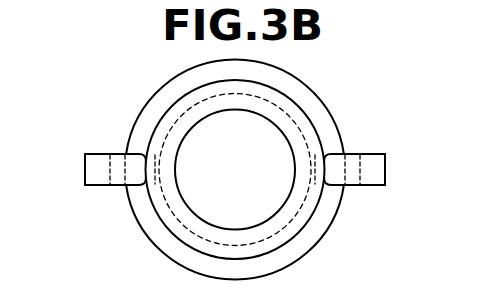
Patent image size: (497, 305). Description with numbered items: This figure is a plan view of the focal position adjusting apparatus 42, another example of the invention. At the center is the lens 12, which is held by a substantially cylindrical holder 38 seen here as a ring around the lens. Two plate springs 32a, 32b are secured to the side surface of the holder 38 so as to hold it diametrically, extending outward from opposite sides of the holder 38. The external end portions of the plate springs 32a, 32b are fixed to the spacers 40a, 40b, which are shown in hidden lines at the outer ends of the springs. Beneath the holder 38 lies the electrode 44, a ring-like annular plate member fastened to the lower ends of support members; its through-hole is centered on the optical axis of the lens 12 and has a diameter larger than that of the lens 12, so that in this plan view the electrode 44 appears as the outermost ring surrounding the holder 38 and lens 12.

The lens 12 is at (280, 155).
The holder 38 is at (163, 117).
The electrode 44 is at (300, 245).
The adjusting apparatus 42 is at (128, 252).
The plate spring 32a is at (93, 180).
The plate spring 32b is at (372, 180).
The spacer 40a is at (93, 152).
The spacer 40b is at (372, 162).